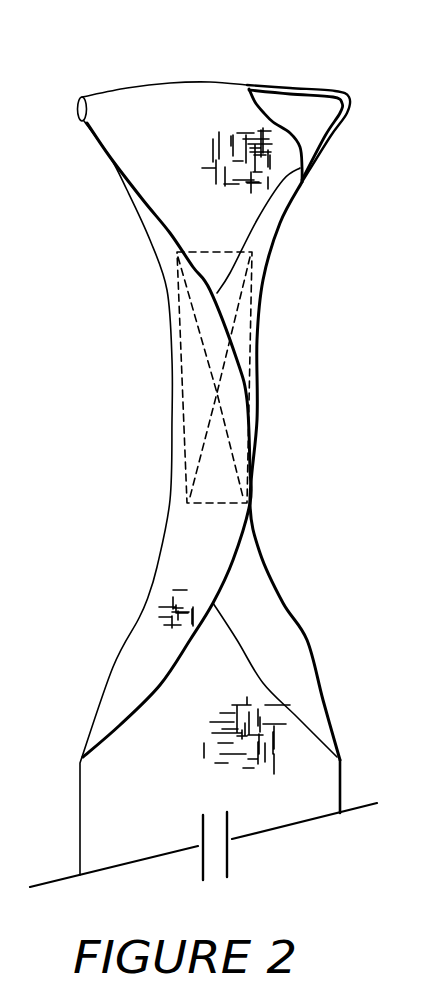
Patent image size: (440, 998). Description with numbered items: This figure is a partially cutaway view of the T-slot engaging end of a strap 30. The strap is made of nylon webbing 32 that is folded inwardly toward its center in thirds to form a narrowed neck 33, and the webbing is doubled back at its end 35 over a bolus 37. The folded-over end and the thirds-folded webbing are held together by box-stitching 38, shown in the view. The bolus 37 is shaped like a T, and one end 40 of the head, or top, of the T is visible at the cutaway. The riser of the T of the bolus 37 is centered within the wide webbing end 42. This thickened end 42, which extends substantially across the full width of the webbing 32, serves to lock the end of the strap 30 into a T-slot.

The strap 30 is at (123, 650).
The nylon webbing 32 is at (340, 780).
The neck 33 is at (257, 517).
The end 35 is at (170, 83).
The bolus 37 is at (285, 107).
The box-stitching 38 is at (250, 327).
The end of the head of the T 40 is at (317, 173).
The wide webbing end 42 is at (153, 132).